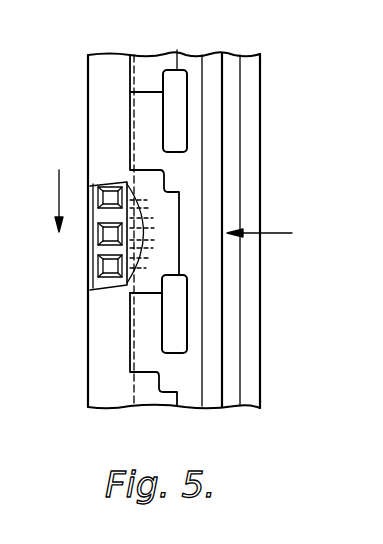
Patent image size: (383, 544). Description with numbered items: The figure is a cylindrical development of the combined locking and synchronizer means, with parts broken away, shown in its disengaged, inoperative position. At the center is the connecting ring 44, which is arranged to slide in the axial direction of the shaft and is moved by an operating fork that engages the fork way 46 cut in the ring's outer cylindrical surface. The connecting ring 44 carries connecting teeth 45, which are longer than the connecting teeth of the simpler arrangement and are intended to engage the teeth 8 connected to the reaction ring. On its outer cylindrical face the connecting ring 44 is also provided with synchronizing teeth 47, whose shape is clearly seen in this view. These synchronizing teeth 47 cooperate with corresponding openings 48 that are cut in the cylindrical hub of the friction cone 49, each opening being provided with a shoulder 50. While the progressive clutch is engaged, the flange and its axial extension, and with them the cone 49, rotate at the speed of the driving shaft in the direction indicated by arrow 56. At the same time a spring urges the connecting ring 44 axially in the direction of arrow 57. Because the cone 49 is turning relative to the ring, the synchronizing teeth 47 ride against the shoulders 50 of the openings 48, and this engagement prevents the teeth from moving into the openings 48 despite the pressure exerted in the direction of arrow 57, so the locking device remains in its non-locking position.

The connecting ring 44 is at (208, 72).
The fork way 46 is at (232, 128).
The synchronizing teeth 47 is at (178, 320).
The openings 48 is at (130, 112).
The friction cone 49 is at (98, 70).
The shoulders 50 is at (162, 280).
The connecting teeth 45 is at (137, 232).
The teeth 8 is at (105, 268).
The arrow 56 is at (58, 188).
The arrow 57 is at (278, 233).